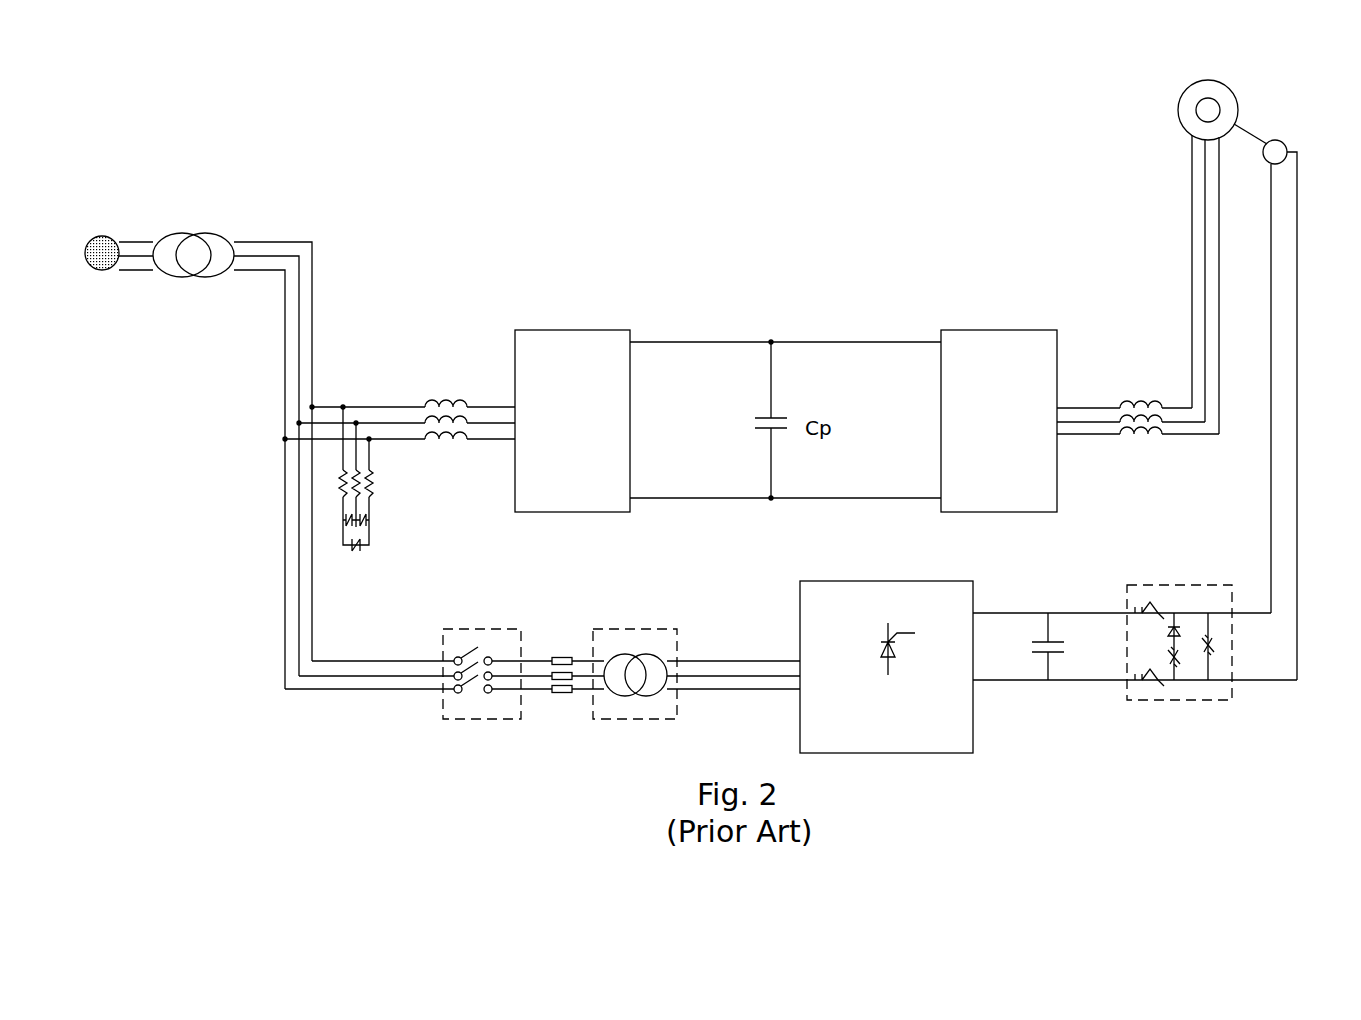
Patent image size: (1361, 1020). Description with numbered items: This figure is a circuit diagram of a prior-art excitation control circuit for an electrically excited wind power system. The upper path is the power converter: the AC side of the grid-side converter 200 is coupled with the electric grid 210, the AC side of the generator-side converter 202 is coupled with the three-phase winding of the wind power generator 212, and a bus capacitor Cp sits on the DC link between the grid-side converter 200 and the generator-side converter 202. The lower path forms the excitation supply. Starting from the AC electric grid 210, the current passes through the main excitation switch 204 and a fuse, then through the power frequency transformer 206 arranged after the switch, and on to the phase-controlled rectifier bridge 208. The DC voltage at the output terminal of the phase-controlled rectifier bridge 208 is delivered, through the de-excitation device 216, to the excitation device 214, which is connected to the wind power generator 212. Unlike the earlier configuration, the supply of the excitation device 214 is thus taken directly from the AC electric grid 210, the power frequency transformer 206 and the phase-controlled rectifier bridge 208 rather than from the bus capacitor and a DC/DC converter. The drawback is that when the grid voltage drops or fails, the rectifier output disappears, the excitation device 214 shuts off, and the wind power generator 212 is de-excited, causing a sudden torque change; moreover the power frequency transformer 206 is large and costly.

The grid-side converter 200 is at (571, 328).
The generator-side converter 202 is at (1003, 328).
The main excitation switch 204 is at (482, 627).
The power frequency transformer 206 is at (641, 627).
The phase-controlled rectifier bridge 208 is at (888, 579).
The electric grid 210 is at (106, 232).
The wind power generator 212 is at (1211, 78).
The excitation device 214 is at (1283, 141).
The de-excitation device 216 is at (1181, 583).